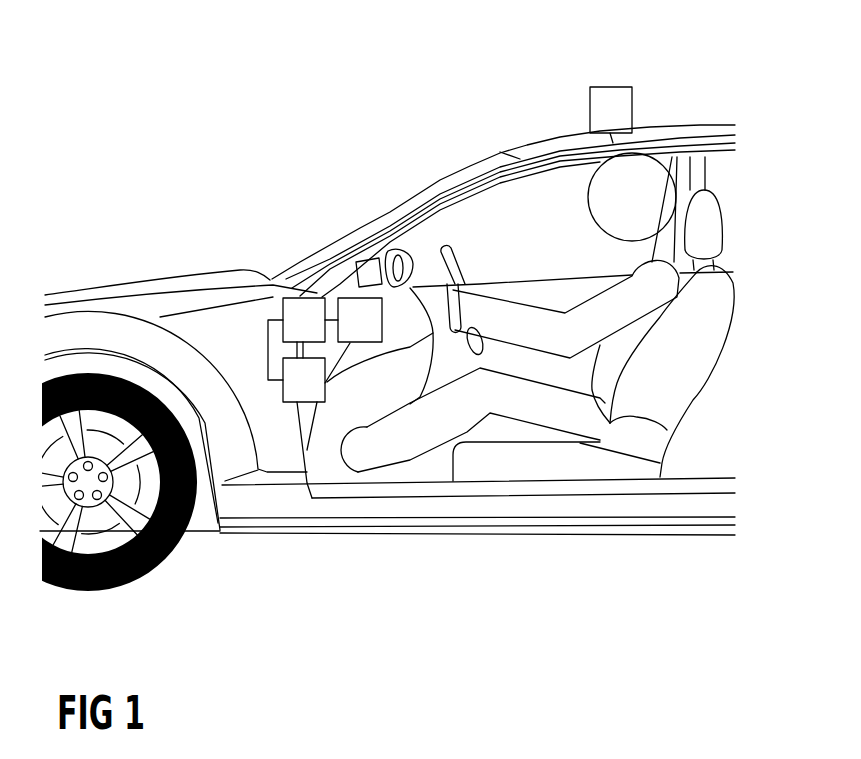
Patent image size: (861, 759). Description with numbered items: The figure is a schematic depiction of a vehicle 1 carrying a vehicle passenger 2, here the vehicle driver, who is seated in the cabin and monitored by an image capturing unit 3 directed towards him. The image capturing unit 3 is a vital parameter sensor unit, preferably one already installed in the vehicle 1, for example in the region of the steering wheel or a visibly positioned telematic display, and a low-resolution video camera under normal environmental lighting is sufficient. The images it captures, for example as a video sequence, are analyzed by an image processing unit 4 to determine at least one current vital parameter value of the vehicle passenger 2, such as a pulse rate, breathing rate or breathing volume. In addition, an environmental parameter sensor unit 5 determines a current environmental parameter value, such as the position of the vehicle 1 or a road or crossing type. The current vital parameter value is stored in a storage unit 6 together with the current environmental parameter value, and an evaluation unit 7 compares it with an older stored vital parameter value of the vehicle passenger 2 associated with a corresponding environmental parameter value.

The vehicle 1 is at (557, 144).
The vehicle passenger 2 is at (627, 187).
The image capturing unit 3 is at (374, 263).
The image processing unit 4 is at (353, 340).
The environmental parameter sensor unit 5 is at (611, 115).
The storage unit 6 is at (296, 339).
The evaluation unit 7 is at (304, 428).